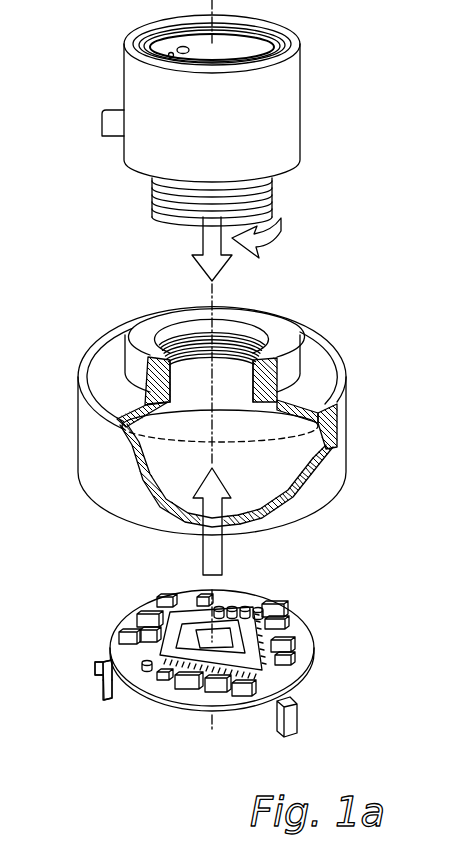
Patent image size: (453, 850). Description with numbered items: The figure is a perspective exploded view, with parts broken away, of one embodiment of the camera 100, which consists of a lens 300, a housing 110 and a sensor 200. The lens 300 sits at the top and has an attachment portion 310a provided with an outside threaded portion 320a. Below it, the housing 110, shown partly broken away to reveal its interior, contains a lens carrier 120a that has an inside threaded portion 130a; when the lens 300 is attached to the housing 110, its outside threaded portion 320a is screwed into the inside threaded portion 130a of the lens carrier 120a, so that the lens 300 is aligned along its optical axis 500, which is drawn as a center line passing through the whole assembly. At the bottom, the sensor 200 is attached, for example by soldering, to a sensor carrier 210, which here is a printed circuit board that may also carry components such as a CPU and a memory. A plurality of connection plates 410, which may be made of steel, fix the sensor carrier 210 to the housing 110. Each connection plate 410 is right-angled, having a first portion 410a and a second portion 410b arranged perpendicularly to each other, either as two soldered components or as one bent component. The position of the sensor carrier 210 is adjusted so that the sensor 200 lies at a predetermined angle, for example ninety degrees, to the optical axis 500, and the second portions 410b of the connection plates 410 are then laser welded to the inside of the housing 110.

The camera 100 is at (370, 51).
The lens 300 is at (140, 91).
The attachment portion 310a is at (302, 182).
The outside threaded portion 320a is at (272, 200).
The optical axis 500 is at (232, 287).
The inside threaded portion 130a is at (185, 350).
The lens carrier 120a is at (283, 380).
The housing 110 is at (338, 459).
The sensor 200 is at (310, 635).
The sensor carrier 210 is at (293, 623).
The connection plates 410 is at (322, 694).
The first portion 410a is at (105, 665).
The second portion 410b is at (93, 686).